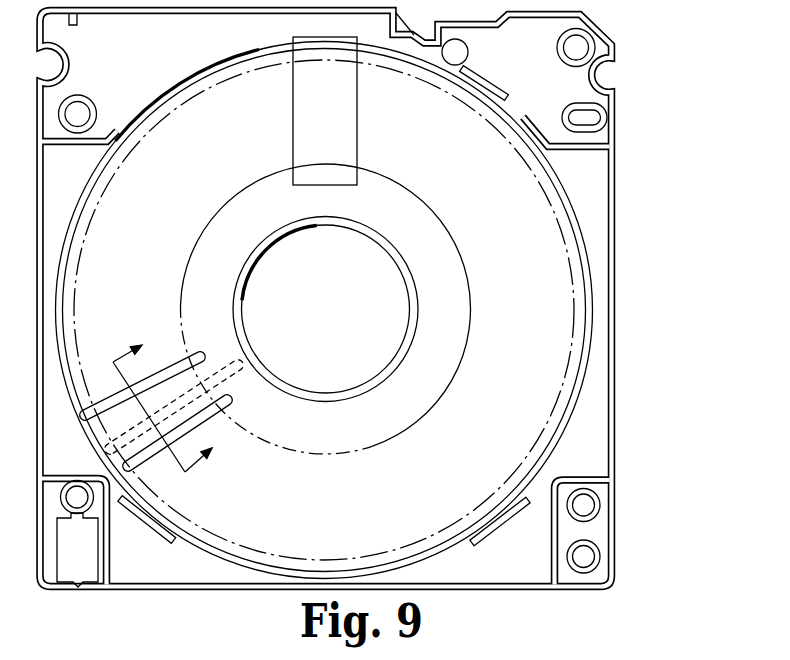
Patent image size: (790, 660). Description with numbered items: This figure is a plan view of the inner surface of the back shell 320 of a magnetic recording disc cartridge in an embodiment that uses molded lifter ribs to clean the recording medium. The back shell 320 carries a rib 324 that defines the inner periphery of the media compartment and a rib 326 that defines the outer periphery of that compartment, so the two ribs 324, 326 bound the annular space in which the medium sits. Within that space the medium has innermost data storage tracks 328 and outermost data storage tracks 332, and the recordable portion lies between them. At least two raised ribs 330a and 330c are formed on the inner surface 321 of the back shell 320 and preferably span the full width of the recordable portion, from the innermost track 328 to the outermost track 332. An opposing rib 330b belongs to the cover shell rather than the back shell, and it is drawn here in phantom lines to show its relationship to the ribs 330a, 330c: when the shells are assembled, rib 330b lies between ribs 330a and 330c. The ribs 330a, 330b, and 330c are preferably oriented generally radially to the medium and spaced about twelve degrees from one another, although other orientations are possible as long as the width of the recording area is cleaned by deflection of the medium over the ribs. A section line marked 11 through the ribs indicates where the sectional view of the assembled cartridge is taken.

The back shell 320 is at (623, 148).
The inner surface 321 is at (469, 162).
The rib 324 is at (408, 273).
The rib 326 is at (593, 290).
The innermost data storage tracks 328 is at (467, 290).
The outermost data storage tracks 332 is at (553, 415).
The raised rib 330a is at (181, 493).
The opposing rib 330b is at (243, 347).
The raised rib 330c is at (143, 357).
The section line 11- 11 is at (186, 398).